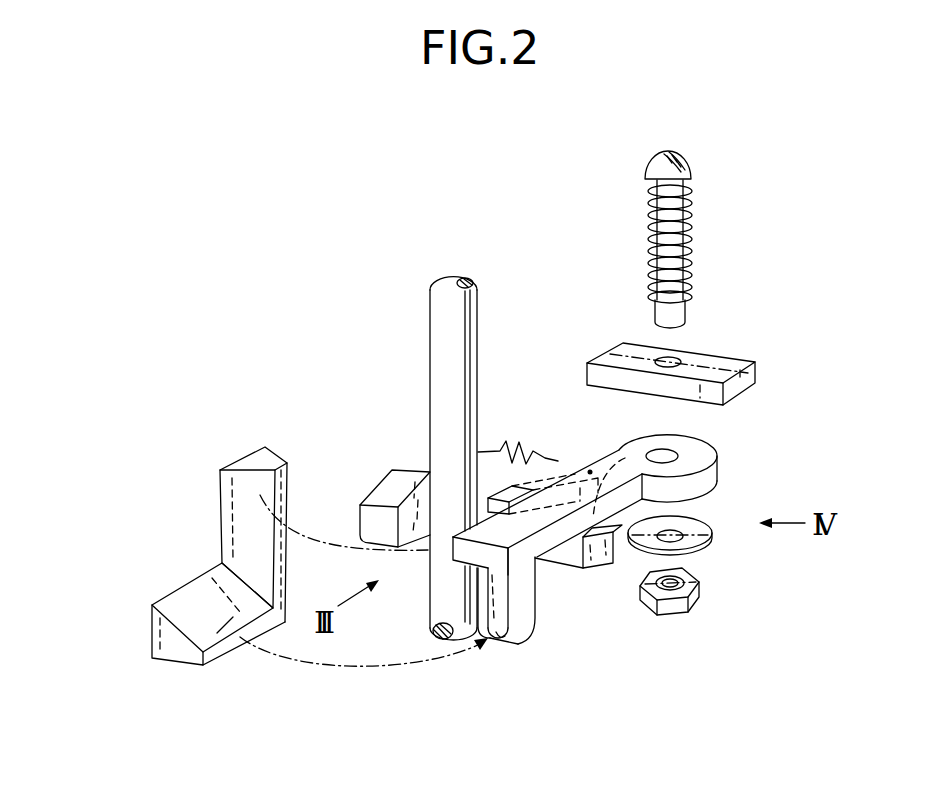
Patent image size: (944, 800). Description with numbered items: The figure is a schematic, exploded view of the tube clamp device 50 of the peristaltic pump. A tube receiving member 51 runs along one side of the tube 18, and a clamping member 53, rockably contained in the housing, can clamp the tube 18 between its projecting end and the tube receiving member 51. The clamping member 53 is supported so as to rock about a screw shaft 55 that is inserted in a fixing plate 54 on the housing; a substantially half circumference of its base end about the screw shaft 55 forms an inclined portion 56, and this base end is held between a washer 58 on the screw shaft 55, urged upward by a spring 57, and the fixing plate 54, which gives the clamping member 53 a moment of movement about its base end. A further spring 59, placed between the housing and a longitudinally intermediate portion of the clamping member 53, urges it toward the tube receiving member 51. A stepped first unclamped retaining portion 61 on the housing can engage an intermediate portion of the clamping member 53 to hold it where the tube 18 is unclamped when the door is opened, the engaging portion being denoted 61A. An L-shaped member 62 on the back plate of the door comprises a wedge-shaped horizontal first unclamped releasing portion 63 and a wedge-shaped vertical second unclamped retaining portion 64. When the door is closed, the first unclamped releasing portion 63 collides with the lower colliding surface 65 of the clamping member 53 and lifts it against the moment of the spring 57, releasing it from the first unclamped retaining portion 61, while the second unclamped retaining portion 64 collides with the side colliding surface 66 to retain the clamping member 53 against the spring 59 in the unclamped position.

The tube 18 is at (436, 323).
The tube clamp device 50 is at (623, 384).
The tube receiving member 51 is at (398, 495).
The clamping member 53 is at (550, 616).
The fixing plate 54 is at (745, 365).
The screw shaft 55 is at (692, 168).
The inclined portion 56 is at (584, 522).
The spring 57 is at (690, 217).
The washer 58 is at (710, 545).
The spring 59 is at (513, 451).
The first unclamped retaining portion 61 is at (500, 487).
The engaged portion of the first unclamped retaining portion 61A is at (591, 470).
The L-shaped member 62 is at (242, 577).
The first unclamped releasing portion 63 is at (235, 647).
The second unclamped retaining portion 64 is at (262, 495).
The lower colliding surface 65 is at (498, 650).
The side colliding surface 66 is at (455, 540).